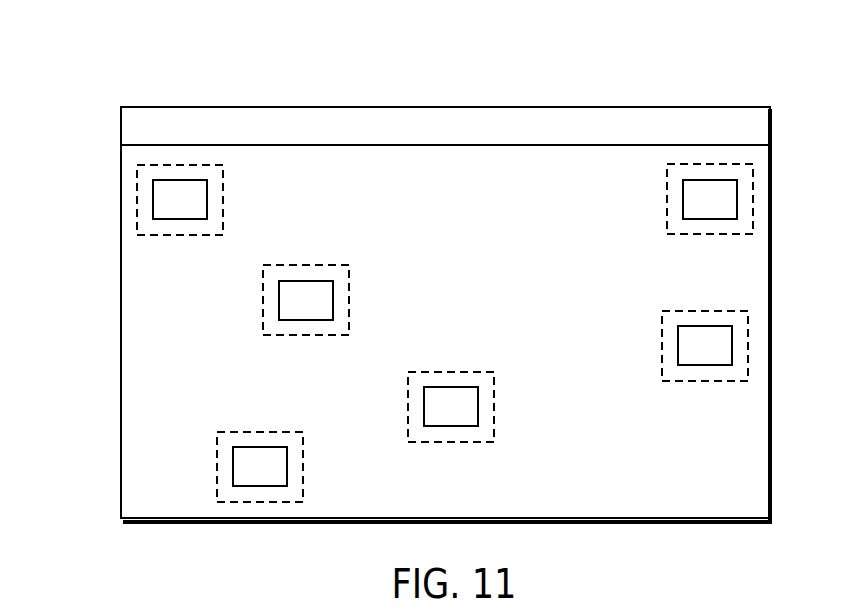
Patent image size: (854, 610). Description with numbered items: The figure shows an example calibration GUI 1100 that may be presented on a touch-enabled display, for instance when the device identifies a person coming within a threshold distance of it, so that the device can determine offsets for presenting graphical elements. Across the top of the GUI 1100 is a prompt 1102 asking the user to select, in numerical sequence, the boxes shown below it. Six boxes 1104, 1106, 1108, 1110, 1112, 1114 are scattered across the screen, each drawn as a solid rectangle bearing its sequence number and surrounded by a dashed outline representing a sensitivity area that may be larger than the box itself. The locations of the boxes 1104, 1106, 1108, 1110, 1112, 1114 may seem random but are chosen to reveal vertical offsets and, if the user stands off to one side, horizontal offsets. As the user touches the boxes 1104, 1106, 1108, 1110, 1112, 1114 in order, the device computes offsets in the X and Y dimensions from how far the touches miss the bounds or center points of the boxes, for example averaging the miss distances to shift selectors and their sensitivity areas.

The calibration GUI 1100 is at (145, 47).
The prompt 1102 is at (125, 127).
The box 1104 is at (223, 197).
The box 1106 is at (662, 346).
The box 1108 is at (408, 406).
The box 1110 is at (263, 300).
The box 1112 is at (667, 203).
The box 1114 is at (217, 467).